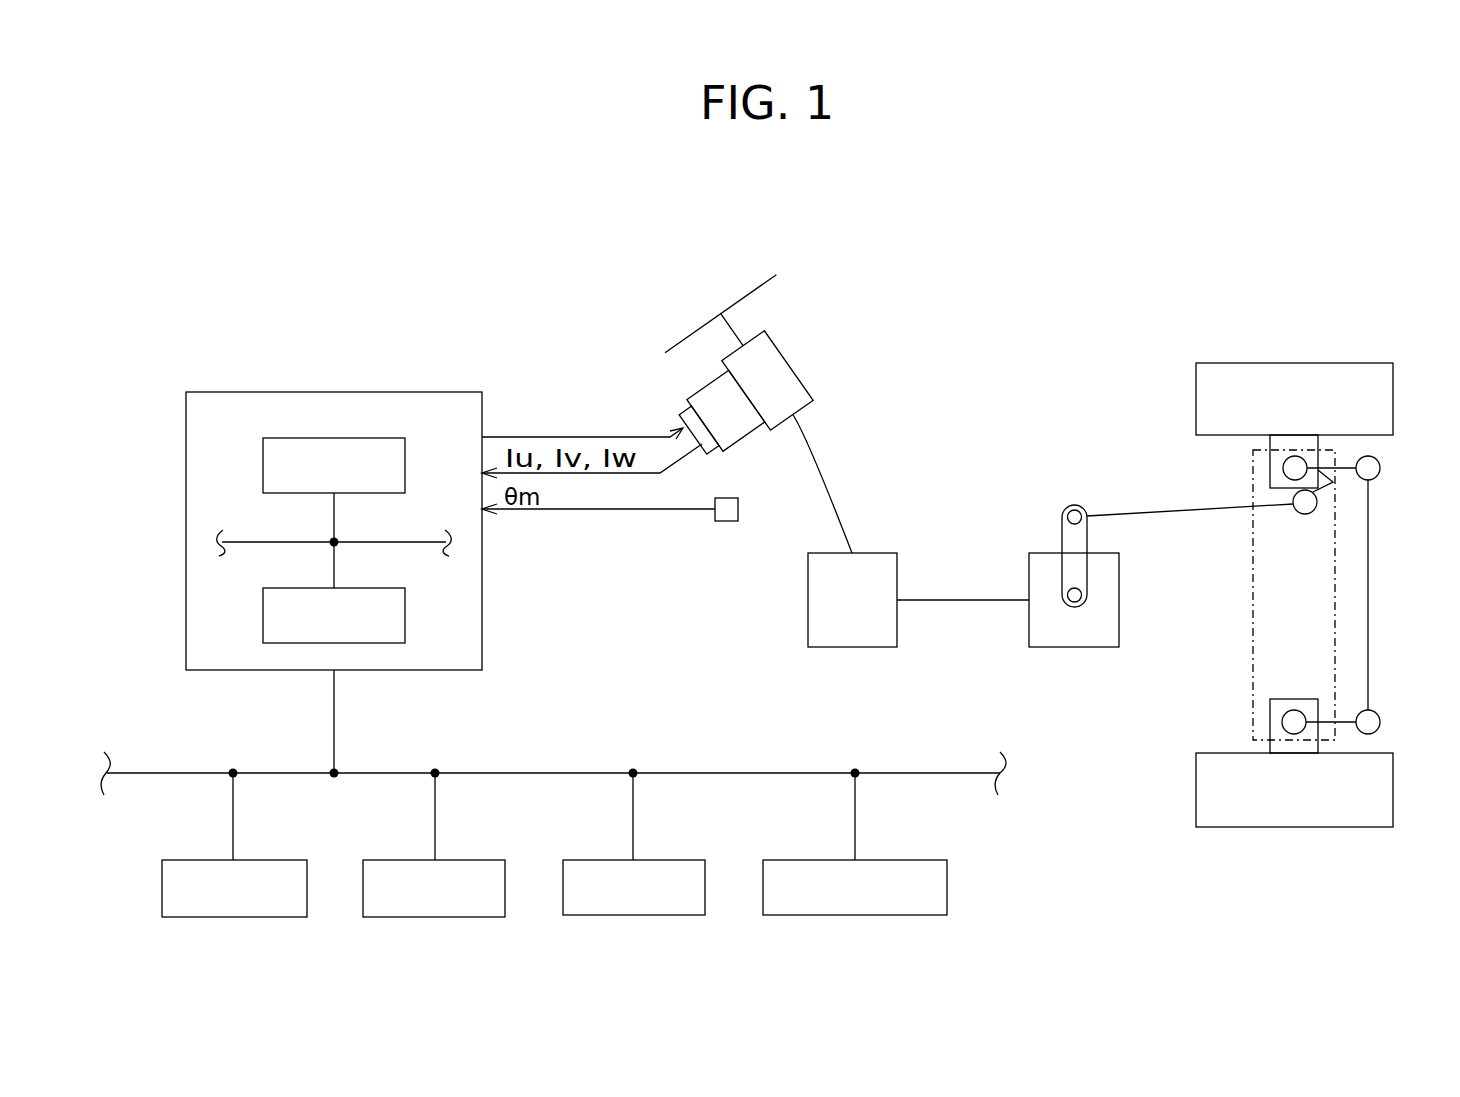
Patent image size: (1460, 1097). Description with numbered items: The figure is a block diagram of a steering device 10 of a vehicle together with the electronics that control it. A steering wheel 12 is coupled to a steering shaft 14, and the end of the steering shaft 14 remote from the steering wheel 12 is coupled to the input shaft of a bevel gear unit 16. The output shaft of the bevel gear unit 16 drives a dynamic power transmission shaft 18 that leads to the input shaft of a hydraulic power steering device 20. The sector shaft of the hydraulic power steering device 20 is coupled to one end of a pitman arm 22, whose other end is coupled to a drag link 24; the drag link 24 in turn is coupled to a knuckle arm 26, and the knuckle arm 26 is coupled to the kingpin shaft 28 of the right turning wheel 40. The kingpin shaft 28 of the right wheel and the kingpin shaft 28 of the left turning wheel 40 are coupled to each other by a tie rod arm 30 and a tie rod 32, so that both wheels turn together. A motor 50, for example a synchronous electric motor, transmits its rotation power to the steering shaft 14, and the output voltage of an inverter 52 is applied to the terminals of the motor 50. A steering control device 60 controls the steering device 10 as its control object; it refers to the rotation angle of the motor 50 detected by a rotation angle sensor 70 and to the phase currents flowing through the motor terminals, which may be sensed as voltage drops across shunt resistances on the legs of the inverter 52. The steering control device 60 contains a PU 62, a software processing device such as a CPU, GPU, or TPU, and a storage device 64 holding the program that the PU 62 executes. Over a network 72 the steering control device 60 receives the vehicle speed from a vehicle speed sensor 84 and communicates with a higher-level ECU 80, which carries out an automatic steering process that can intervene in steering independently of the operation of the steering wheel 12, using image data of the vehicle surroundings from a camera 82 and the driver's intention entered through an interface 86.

The steering device 10 is at (1012, 322).
The steering wheel 12 is at (752, 292).
The steering shaft 14 is at (832, 484).
The bevel gear unit 16 is at (808, 603).
The dynamic power transmission shaft 18 is at (953, 603).
The hydraulic power steering device 20 is at (1120, 598).
The pitman arm 22 is at (1062, 517).
The drag link 24 is at (1150, 509).
The knuckle arm 26 is at (1337, 494).
The kingpin shaft 28 is at (1283, 467).
The tie rod arm 30 is at (1355, 460).
The tie rod 32 is at (1370, 592).
The turning wheel 40 is at (1351, 363).
The motor 50 is at (745, 443).
The inverter 52 is at (683, 400).
The steering control device 60 is at (418, 393).
The PU 62 is at (363, 438).
The storage device 64 is at (363, 588).
The rotation angle sensor 70 is at (726, 522).
The network 72 is at (337, 722).
The higher-level ECU 80 is at (262, 859).
The camera 82 is at (463, 859).
The vehicle speed sensor 84 is at (663, 859).
The interface 86 is at (895, 859).